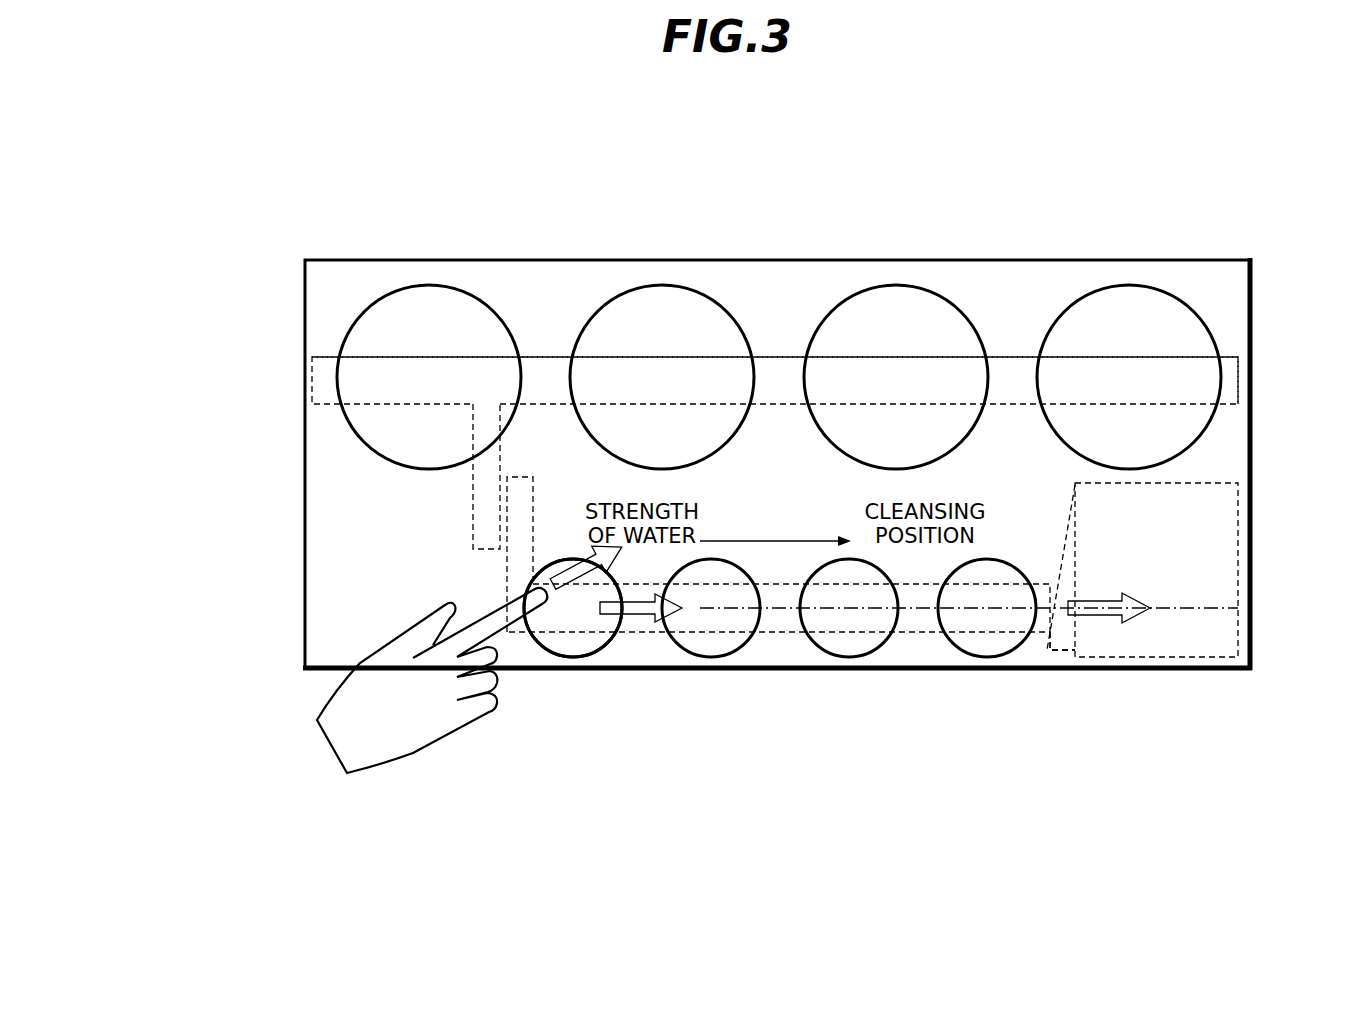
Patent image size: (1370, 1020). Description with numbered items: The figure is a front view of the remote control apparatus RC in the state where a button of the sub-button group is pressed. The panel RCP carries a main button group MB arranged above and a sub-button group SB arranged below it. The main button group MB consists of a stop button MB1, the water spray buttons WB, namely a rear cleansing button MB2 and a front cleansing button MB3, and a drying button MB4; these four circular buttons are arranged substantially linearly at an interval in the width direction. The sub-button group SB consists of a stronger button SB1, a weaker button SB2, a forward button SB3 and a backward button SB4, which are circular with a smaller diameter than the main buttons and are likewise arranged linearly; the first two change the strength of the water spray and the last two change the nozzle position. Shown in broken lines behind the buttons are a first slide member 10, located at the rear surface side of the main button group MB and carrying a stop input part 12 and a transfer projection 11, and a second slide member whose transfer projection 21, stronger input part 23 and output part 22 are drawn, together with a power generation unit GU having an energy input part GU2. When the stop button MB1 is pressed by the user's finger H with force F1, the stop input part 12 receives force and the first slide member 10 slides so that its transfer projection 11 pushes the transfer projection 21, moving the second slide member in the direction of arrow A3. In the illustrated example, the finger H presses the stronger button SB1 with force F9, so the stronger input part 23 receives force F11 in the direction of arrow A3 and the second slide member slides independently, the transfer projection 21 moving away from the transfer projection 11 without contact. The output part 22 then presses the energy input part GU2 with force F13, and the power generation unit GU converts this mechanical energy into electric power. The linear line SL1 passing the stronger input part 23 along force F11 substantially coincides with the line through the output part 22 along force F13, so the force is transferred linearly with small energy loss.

The remote control apparatus RC is at (335, 152).
The panel RCP is at (325, 639).
The first slide member 10 is at (1238, 357).
The transfer projection 11 is at (472, 508).
The stop input part 12 is at (402, 398).
The transfer projection 21 is at (533, 527).
The output part 22 is at (1057, 633).
The stronger input part 23 is at (580, 648).
The main button group MB is at (578, 154).
The stop button MB1 is at (480, 318).
The rear cleansing button MB2 is at (683, 307).
The front cleansing button MB3 is at (890, 300).
The drying button MB4 is at (1128, 300).
The water spray buttons WB is at (708, 195).
The force F1 is at (433, 300).
The force F9 is at (618, 550).
The force F11 is at (640, 620).
The force F13 is at (1127, 595).
The arrow A3 is at (778, 533).
The sub-button group SB is at (600, 751).
The stronger button SB1 is at (591, 650).
The weaker button SB2 is at (731, 650).
The forward button SB3 is at (845, 650).
The backward button SB4 is at (975, 648).
The power generation unit GU is at (1240, 598).
The energy input part GU2 is at (1053, 650).
The linear line SL1 is at (1190, 612).
The user's finger H is at (435, 628).